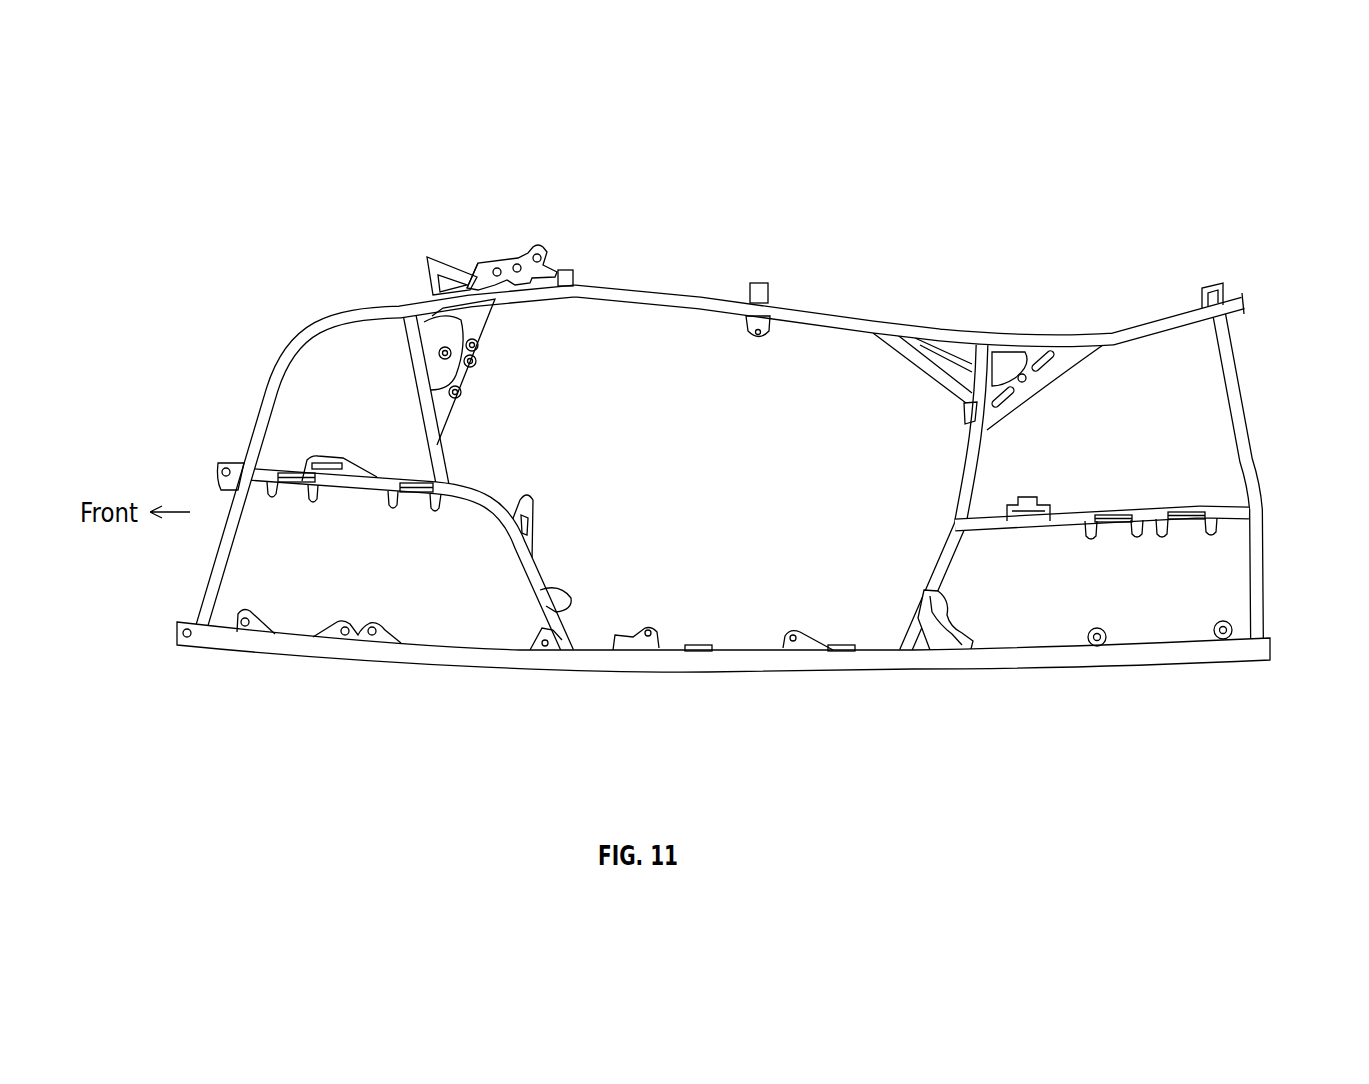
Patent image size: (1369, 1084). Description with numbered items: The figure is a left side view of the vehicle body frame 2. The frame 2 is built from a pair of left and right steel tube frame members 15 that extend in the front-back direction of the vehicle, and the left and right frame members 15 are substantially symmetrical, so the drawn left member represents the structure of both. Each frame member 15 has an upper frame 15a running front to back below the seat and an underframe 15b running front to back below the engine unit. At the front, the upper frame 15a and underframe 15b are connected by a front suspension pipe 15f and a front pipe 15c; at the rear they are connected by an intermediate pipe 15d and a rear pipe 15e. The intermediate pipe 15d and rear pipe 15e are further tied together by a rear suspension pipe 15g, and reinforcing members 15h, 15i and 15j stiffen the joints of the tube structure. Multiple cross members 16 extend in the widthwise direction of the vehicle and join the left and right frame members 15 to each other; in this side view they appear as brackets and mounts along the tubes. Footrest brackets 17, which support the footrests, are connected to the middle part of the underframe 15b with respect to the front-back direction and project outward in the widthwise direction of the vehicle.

The vehicle body frame 2 is at (328, 296).
The frame member 15 is at (843, 303).
The upper frame 15a is at (688, 290).
The underframe 15b is at (675, 675).
The front pipe 15c is at (447, 457).
The intermediate pipe 15d is at (950, 500).
The rear pipe 15e is at (1250, 418).
The front suspension pipe 15f is at (352, 493).
The rear suspension pipe 15g is at (1092, 498).
The reinforcing member 15h is at (472, 373).
The reinforcing member 15i is at (912, 363).
The reinforcing member 15j is at (1048, 377).
The cross member 16 is at (505, 260).
The footrest bracket 17 is at (697, 643).